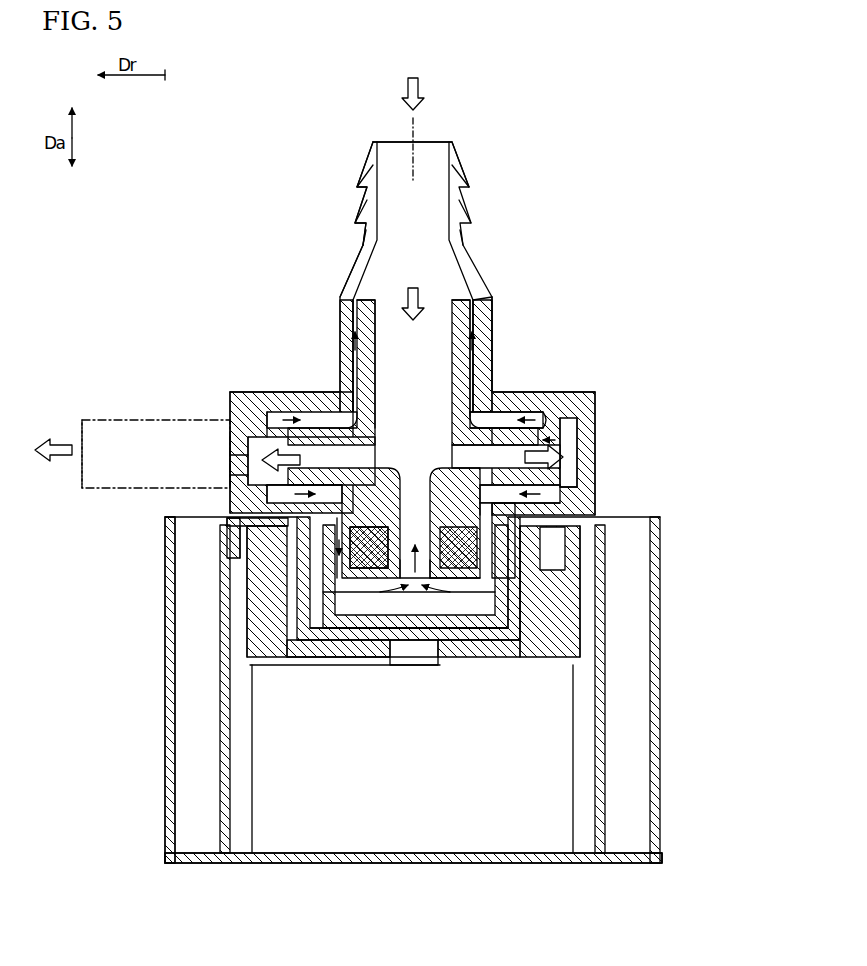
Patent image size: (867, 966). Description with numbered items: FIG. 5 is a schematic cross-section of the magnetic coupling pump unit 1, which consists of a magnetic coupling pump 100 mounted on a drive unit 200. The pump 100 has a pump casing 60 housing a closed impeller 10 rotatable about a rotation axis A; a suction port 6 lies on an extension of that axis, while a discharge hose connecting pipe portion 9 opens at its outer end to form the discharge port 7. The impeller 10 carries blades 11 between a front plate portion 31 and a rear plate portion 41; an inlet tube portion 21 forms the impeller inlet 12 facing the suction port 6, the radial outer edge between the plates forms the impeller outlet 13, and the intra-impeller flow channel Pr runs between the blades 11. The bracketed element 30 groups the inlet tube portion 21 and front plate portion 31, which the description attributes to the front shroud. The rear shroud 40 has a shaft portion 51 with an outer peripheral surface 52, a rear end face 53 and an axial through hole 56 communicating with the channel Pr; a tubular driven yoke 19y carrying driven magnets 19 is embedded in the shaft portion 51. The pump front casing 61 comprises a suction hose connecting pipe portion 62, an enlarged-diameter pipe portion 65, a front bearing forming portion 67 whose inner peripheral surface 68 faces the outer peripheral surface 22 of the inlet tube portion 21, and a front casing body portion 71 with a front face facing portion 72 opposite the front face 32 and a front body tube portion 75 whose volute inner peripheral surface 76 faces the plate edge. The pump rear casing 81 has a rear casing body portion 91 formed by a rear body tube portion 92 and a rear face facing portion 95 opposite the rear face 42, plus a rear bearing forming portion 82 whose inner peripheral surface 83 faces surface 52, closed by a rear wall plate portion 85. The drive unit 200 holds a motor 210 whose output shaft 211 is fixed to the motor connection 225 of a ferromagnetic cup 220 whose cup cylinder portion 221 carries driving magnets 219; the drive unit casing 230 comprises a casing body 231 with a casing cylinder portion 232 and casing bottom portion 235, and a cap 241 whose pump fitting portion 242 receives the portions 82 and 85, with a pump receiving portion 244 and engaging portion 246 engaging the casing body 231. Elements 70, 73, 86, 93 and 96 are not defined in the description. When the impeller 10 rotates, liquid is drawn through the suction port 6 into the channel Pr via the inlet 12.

The magnetic coupling pump unit 1 is at (640, 415).
The suction port 6 is at (378, 142).
The discharge port 7 is at (88, 428).
The discharge hose connecting pipe portion 9 is at (175, 420).
The closed impeller 10 is at (592, 432).
The blades 11 is at (472, 330).
The impeller inlet 12 is at (462, 300).
The impeller outlet 13 is at (262, 470).
The driven magnets 19 is at (345, 550).
The driven yoke 19y is at (372, 564).
The inlet tube portion 21 is at (480, 365).
The outer peripheral surface of the inlet tube portion 22 is at (356, 312).
The outer tube 30 is at (577, 316).
The front plate portion 31 is at (478, 385).
The front face of the front plate portion 32 is at (522, 420).
The rear shroud 40 is at (712, 445).
The rear plate portion 41 is at (560, 500).
The rear face of the rear plate portion 42 is at (582, 482).
The shaft portion 51 is at (540, 508).
The outer peripheral surface of the shaft portion 52 is at (250, 620).
The rear end face of the shaft portion 53 is at (340, 545).
The through hole 56 is at (390, 662).
The pump casing 60 is at (463, 160).
The pump front casing 61 is at (348, 258).
The suction hose connecting pipe portion 62 is at (372, 168).
The enlarged-diameter pipe portion 65 is at (346, 262).
The front bearing forming portion 67 is at (348, 325).
The inner peripheral surface of the front bearing forming portion 68 is at (352, 341).
The housing 70 is at (412, 453).
The front casing body portion 71 is at (170, 300).
The front face facing portion 72 is at (300, 395).
The passage 73 is at (290, 418).
The front body tube portion 75 is at (258, 470).
The inner peripheral surface of the front body tube portion 76 is at (240, 455).
The pump rear casing 81 is at (485, 580).
The rear bearing forming portion 82 is at (480, 596).
The inner peripheral surface of the rear bearing forming portion 83 is at (460, 612).
The rear wall plate portion 85 is at (418, 664).
The cup bottom 86 is at (470, 645).
The rear casing body portion 91 is at (52, 478).
The rear body tube portion 92 is at (240, 480).
The outflow direction 93 is at (45, 443).
The rear face facing portion 95 is at (228, 535).
The ring groove 96 is at (300, 512).
The magnetic coupling pump 100 is at (540, 175).
The drive unit 200 is at (160, 712).
The motor 210 is at (520, 838).
The output shaft 211 is at (414, 662).
The driving magnets 219 is at (330, 522).
The cup 220 is at (70, 640).
The cup cylinder portion 221 is at (268, 641).
The motor connection 225 is at (240, 716).
The drive unit casing 230 is at (642, 863).
The casing body 231 is at (72, 852).
The casing cylinder portion 232 is at (172, 822).
The casing bottom portion 235 is at (262, 857).
The cap 241 is at (712, 592).
The pump fitting portion 242 is at (530, 608).
The pump receiving portion 244 is at (562, 624).
The engaging portion 246 is at (573, 683).
The rotation axis A is at (418, 122).
The intra-impeller flow channel Pr is at (556, 438).